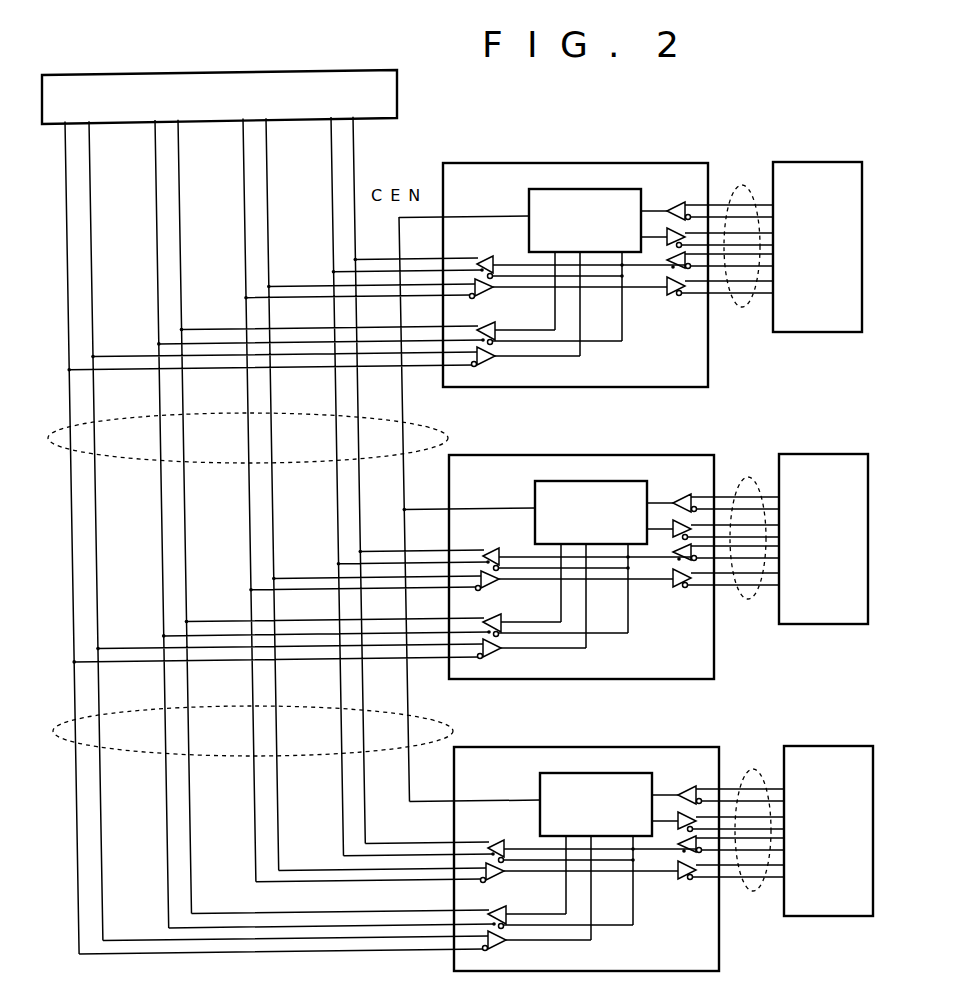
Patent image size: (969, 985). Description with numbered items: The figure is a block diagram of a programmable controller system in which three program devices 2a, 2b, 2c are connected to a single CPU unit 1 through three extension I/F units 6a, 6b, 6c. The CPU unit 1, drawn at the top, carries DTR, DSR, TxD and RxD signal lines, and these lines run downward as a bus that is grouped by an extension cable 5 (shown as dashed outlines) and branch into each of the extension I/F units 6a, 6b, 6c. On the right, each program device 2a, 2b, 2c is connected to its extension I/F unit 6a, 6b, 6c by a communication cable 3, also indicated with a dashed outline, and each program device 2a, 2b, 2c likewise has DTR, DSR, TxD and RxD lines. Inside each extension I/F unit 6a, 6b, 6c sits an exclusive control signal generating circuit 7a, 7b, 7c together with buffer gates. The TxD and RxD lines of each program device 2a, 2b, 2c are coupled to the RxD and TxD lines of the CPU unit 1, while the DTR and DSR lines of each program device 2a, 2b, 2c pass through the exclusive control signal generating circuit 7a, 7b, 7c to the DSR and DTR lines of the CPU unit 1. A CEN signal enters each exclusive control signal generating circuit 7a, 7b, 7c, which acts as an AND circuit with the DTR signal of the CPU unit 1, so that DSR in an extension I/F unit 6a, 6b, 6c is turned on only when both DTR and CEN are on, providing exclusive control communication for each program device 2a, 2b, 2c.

The CPU unit 1 is at (307, 72).
The program device 2a is at (843, 162).
The program device 2b is at (823, 523).
The program device 2c is at (828, 815).
The communication cable 3 is at (741, 185).
The extension cable 5 is at (62, 436).
The extension I/F unit 6a is at (490, 163).
The extension I/F unit 6b is at (614, 554).
The extension I/F unit 6c is at (619, 846).
The exclusive control signal generating circuit 7a is at (575, 189).
The exclusive control signal generating circuit 7b is at (591, 487).
The exclusive control signal generating circuit 7c is at (596, 779).